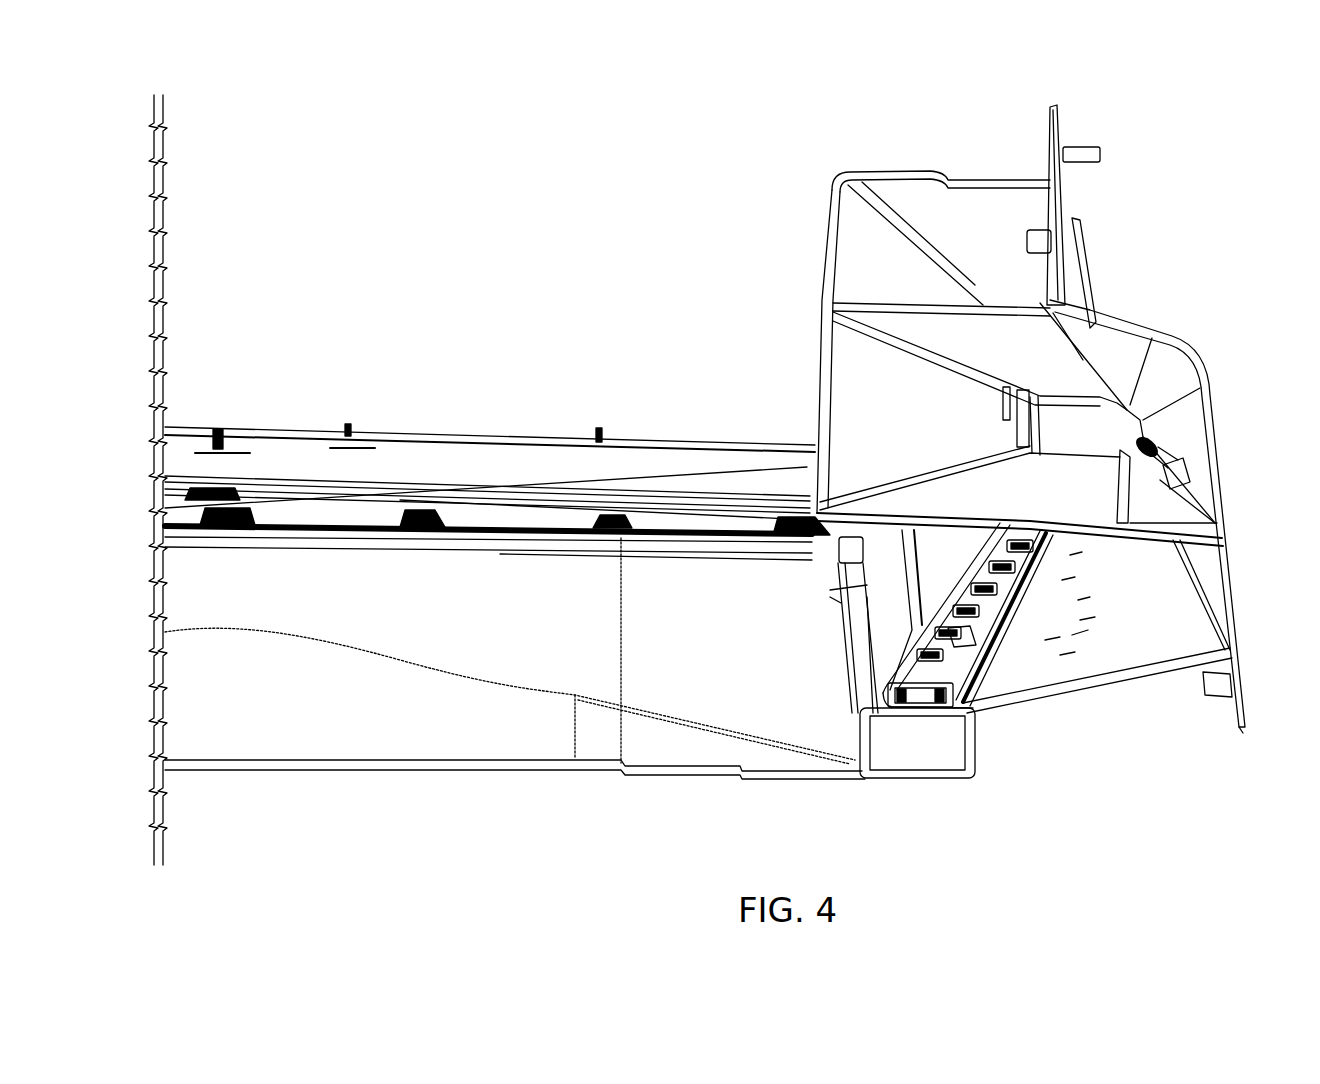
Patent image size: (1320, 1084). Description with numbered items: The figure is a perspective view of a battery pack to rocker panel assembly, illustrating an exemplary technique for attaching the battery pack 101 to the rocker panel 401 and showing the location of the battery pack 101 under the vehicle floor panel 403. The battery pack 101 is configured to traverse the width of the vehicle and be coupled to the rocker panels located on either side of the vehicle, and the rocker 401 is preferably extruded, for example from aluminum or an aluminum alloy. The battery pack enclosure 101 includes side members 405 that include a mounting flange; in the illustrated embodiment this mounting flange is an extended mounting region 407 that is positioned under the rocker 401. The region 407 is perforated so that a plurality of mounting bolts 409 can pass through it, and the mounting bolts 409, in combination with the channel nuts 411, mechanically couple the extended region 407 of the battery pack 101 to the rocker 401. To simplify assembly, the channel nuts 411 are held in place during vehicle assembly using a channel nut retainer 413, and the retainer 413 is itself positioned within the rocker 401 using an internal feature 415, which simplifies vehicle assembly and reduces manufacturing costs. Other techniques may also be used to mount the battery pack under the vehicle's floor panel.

The battery pack 101 is at (353, 700).
The rocker panel 401 is at (1200, 331).
The vehicle floor panel 403 is at (531, 455).
The side members 405 is at (857, 627).
The extended mounting region 407 is at (935, 755).
The mounting bolts 409 is at (927, 648).
The channel nuts 411 is at (930, 675).
The channel nut retainer 413 is at (940, 622).
The internal feature 415 is at (963, 626).